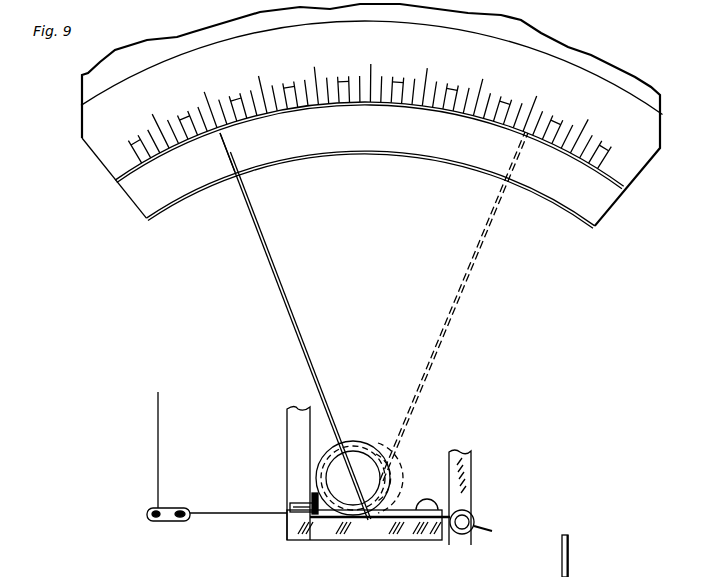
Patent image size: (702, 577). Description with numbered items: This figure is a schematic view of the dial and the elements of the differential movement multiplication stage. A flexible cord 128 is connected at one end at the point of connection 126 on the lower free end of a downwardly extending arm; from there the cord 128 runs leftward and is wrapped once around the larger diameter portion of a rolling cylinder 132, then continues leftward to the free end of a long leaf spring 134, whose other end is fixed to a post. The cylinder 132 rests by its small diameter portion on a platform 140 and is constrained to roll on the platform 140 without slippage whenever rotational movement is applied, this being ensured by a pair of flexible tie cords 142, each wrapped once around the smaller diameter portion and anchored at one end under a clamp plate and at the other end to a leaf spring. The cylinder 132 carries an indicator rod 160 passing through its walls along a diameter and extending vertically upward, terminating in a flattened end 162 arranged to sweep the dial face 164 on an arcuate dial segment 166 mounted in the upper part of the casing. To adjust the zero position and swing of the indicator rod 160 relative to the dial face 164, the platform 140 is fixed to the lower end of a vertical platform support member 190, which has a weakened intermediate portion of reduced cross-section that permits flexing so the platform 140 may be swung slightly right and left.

The point of connection 126 is at (472, 472).
The flexible cord 128 is at (268, 514).
The rolling cylinder 132 is at (378, 427).
The long leaf spring 134 is at (160, 451).
The platform 140 is at (385, 508).
The flexible tie cords 142 is at (520, 3).
The indicator rod 160 is at (299, 330).
The flattened ends 162 is at (220, 140).
The dial faces 164 is at (463, 74).
The arcuate dial segments 166 is at (628, 184).
The vertical platform support member 190 is at (296, 428).